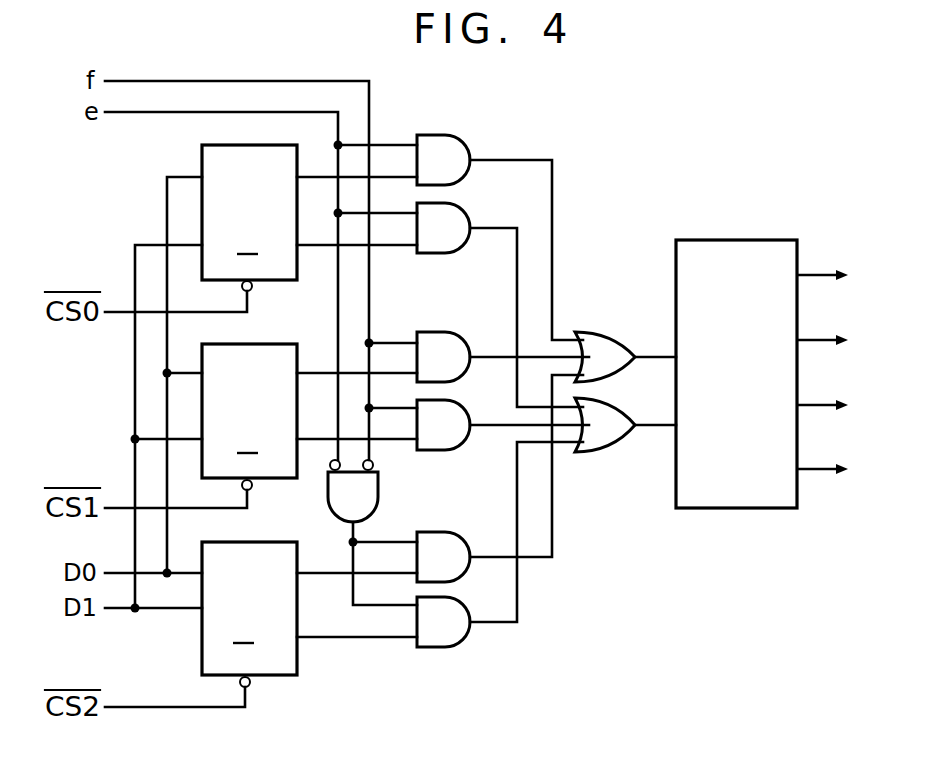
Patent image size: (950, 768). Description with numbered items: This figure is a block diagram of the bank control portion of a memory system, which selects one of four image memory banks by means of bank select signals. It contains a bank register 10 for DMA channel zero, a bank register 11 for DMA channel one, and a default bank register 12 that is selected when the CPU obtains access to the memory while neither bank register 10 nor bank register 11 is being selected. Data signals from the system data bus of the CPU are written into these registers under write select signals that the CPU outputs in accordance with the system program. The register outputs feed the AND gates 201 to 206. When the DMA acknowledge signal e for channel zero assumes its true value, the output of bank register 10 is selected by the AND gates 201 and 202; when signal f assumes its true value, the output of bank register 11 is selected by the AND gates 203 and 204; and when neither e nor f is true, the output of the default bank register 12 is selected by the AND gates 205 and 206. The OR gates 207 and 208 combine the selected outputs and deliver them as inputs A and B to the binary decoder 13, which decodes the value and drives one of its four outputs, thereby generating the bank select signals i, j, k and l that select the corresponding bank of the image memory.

The bank register 10 is at (278, 281).
The bank register 11 is at (278, 479).
The default bank register 12 is at (298, 658).
The binary decoder 13 is at (725, 509).
The AND gate 201 is at (445, 135).
The AND gate 202 is at (460, 204).
The AND gate 203 is at (440, 331).
The AND gate 204 is at (443, 450).
The AND gate 205 is at (443, 532).
The AND gate 206 is at (452, 647).
The OR gate 207 is at (598, 331).
The OR gate 208 is at (603, 453).